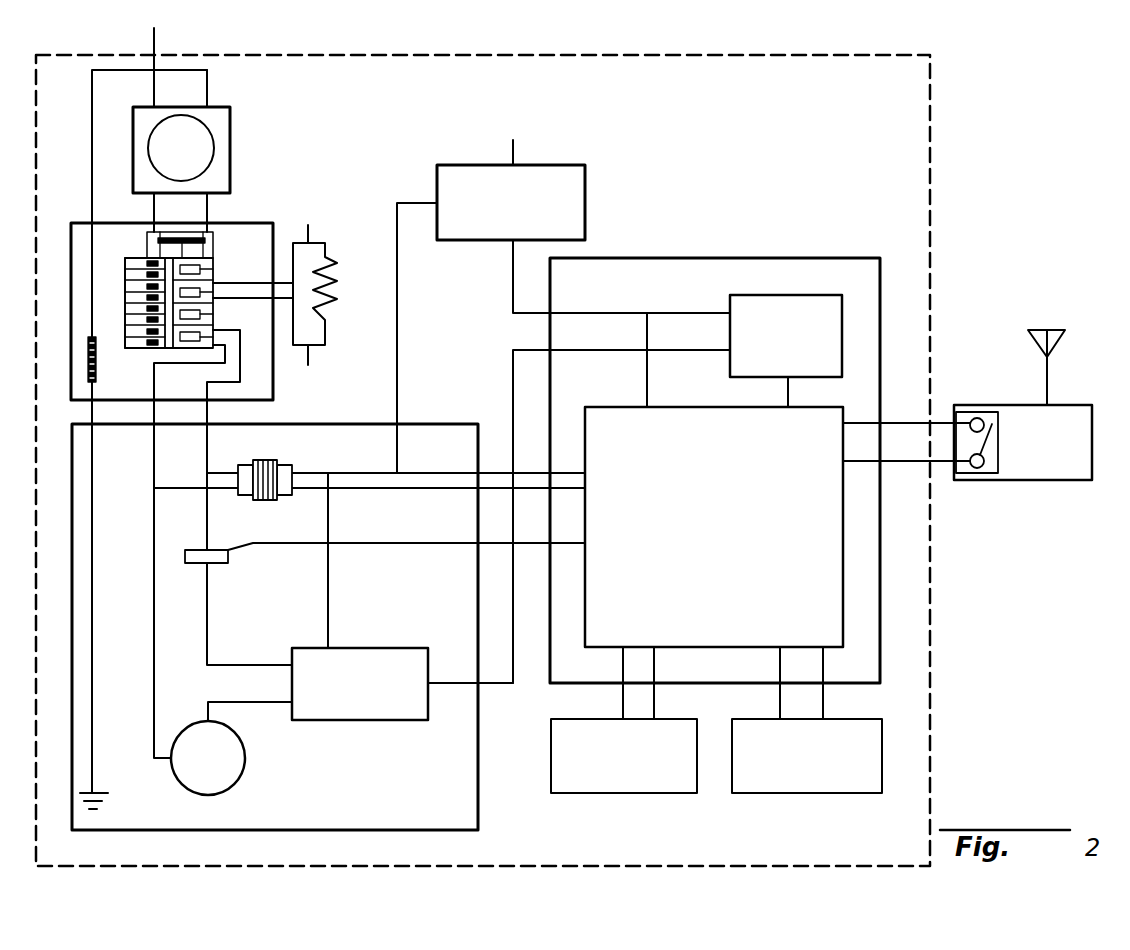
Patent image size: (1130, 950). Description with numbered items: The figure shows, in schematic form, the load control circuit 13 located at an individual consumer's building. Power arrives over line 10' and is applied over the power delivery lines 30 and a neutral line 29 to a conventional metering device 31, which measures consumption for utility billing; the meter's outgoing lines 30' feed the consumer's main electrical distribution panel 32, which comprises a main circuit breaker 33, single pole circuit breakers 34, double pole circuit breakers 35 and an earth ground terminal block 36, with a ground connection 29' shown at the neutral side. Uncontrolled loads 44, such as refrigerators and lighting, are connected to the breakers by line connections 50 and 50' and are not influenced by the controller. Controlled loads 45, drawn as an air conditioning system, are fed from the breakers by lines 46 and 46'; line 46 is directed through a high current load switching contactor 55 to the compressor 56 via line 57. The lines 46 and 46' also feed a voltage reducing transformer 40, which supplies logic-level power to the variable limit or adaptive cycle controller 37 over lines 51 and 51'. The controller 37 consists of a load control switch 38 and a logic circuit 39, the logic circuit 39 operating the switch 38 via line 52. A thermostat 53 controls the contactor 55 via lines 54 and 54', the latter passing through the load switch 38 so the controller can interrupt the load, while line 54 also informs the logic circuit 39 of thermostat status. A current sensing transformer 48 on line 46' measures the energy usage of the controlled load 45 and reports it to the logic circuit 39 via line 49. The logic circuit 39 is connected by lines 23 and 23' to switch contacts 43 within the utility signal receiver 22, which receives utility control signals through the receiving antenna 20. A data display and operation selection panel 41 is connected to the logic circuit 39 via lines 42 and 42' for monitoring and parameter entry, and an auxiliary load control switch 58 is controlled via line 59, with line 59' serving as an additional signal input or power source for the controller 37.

The line 10' is at (182, 59).
The load control circuit 13 is at (515, 55).
The neutral line 29 is at (149, 431).
The ground connection 29' is at (113, 622).
The power delivery lines 30 is at (207, 87).
The supply line from meter 30' is at (181, 212).
The metering device 31 is at (230, 181).
The main electrical distribution panel 32 is at (273, 223).
The main circuit breaker 33 is at (213, 250).
The single pole circuit breakers 34 is at (125, 258).
The double pole circuit breakers 35 is at (213, 272).
The earth ground terminal block 36 is at (96, 380).
The uncontrolled loads 44 is at (337, 281).
The line connection 50 is at (324, 225).
The line connection 50' is at (326, 359).
The controlled loads 45 is at (323, 424).
The line 46 is at (341, 476).
The line 46' is at (396, 451).
The voltage reducing transformer 40 is at (265, 460).
The line 51 is at (344, 544).
The line 51' is at (366, 504).
The current sensing transformer 48 is at (222, 563).
The line 49 is at (368, 545).
The high current load switching contactor 55 is at (385, 648).
The compressor 56 is at (245, 745).
The line 57 is at (230, 702).
The thermostat 53 is at (513, 140).
The line 54 is at (621, 323).
The line 54' is at (621, 501).
The variable limit or adaptive cycle controller 37 is at (707, 258).
The load control switch 38 is at (782, 295).
The logic circuit 39 is at (683, 407).
The line 52 is at (788, 404).
The line 23 is at (906, 408).
The line 23' is at (906, 476).
The utility signal receiver 22 is at (970, 405).
The switch contacts 43 is at (966, 473).
The receiving antenna 20 is at (1047, 330).
The data display and operation selection panel 41 is at (551, 748).
The line 42 is at (597, 683).
The line 42' is at (681, 683).
The auxiliary load control switch 58 is at (882, 748).
The line 59 is at (848, 683).
The line 59' is at (754, 683).